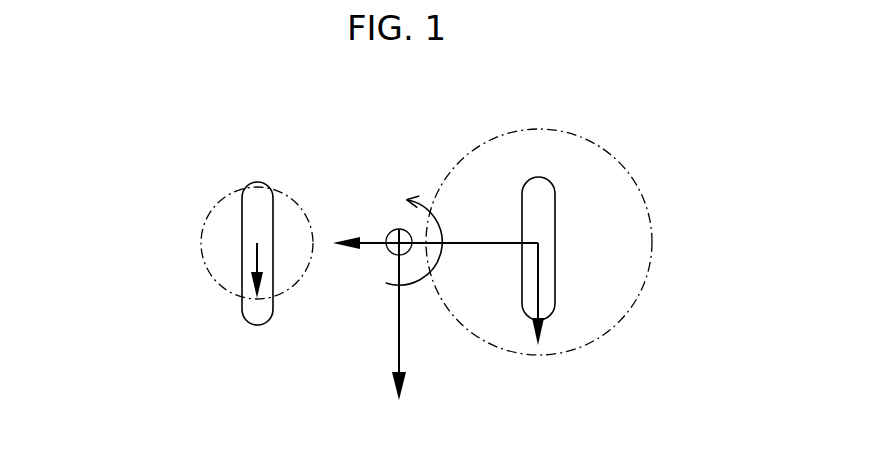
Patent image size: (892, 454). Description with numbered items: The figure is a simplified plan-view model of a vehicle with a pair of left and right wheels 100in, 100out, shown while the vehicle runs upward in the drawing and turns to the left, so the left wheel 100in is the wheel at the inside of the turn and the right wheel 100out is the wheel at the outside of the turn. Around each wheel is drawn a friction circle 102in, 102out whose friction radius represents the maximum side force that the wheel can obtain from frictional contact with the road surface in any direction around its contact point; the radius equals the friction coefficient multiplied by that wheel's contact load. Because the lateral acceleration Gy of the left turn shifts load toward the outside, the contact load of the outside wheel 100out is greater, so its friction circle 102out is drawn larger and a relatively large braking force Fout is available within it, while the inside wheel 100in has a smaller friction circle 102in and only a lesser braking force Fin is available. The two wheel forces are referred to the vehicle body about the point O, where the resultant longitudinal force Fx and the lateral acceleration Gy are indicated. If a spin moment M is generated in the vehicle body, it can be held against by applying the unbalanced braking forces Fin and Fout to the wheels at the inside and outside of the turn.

The left wheel 100in is at (257, 182).
The friction circle 102in is at (217, 286).
The right wheel 100out is at (538, 177).
The friction circle 102out is at (610, 330).
The braking force Fin is at (257, 255).
The braking force Fout is at (538, 297).
The resultant force in x direction Fx is at (400, 332).
The lateral acceleration Gy is at (372, 247).
The spin moment M is at (409, 234).
The origin O is at (391, 234).